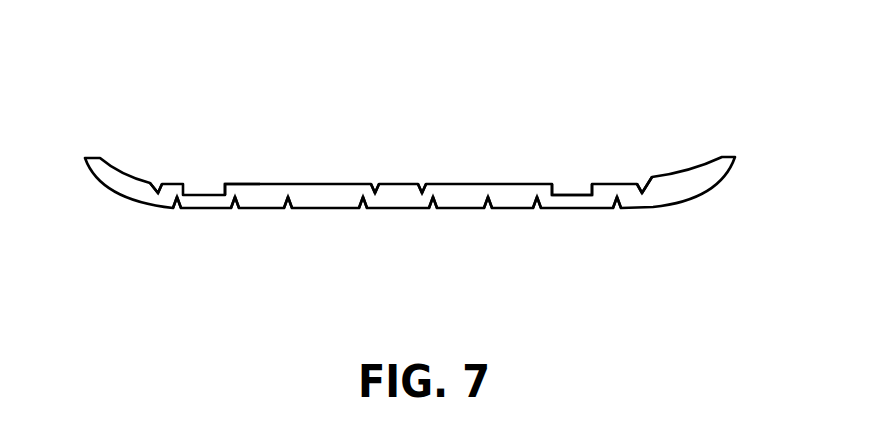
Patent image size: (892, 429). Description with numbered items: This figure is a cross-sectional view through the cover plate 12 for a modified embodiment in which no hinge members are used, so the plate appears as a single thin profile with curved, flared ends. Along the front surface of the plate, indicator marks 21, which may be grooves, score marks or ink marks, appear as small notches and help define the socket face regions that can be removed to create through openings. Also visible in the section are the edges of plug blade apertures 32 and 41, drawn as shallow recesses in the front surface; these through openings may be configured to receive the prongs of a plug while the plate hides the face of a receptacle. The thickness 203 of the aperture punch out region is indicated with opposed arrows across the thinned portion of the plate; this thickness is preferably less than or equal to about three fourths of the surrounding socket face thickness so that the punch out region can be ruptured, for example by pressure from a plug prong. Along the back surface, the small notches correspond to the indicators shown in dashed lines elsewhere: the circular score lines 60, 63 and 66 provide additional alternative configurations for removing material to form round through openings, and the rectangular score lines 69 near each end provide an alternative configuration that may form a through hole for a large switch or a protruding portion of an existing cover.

The cover plate 12 is at (611, 51).
The score mark 21 is at (157, 184).
The plug blade aperture edge 32 is at (225, 184).
The plug blade aperture edge 41 is at (578, 191).
The thickness of the aperture punch out region 203 is at (205, 242).
The circular score line 60 is at (430, 212).
The circular score line 63 is at (287, 212).
The circular score line 66 is at (233, 212).
The rectangular score line 69 is at (176, 212).